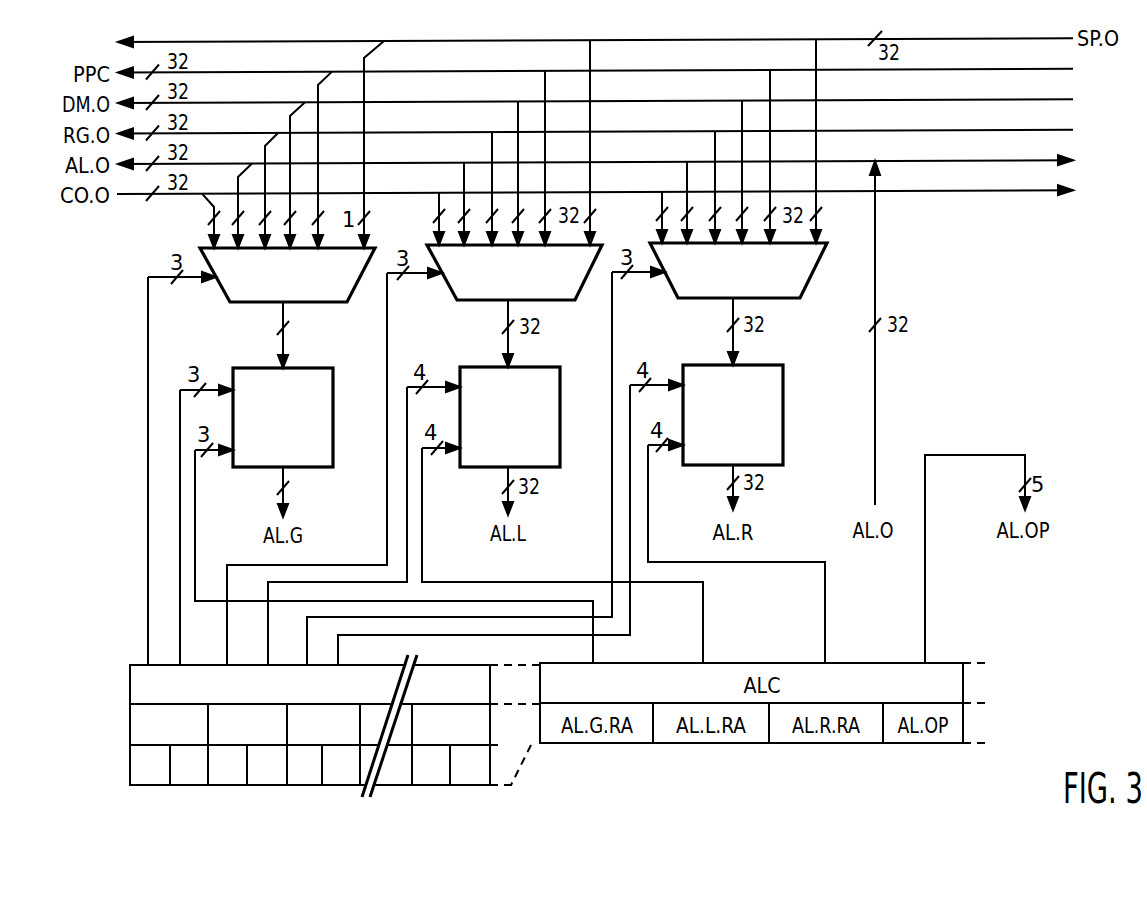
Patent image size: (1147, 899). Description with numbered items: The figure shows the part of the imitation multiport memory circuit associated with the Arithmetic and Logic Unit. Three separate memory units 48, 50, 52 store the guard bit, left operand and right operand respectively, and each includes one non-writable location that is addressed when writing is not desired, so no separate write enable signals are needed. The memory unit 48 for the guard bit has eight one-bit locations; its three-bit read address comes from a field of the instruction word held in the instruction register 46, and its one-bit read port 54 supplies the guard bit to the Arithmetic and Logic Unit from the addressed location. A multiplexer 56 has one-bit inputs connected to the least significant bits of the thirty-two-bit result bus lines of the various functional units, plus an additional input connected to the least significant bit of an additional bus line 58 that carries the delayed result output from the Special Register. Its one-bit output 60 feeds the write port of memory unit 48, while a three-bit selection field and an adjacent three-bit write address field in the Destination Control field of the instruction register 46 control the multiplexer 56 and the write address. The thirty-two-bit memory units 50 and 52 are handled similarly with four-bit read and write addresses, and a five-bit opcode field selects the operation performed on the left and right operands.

The instruction register 46 is at (130, 688).
The memory unit 48 is at (333, 402).
The memory unit 50 is at (560, 380).
The memory unit 52 is at (778, 397).
The read port 54 is at (278, 474).
The multiplexer 56 is at (330, 303).
The bus line 58 is at (265, 41).
The output 60 is at (281, 317).